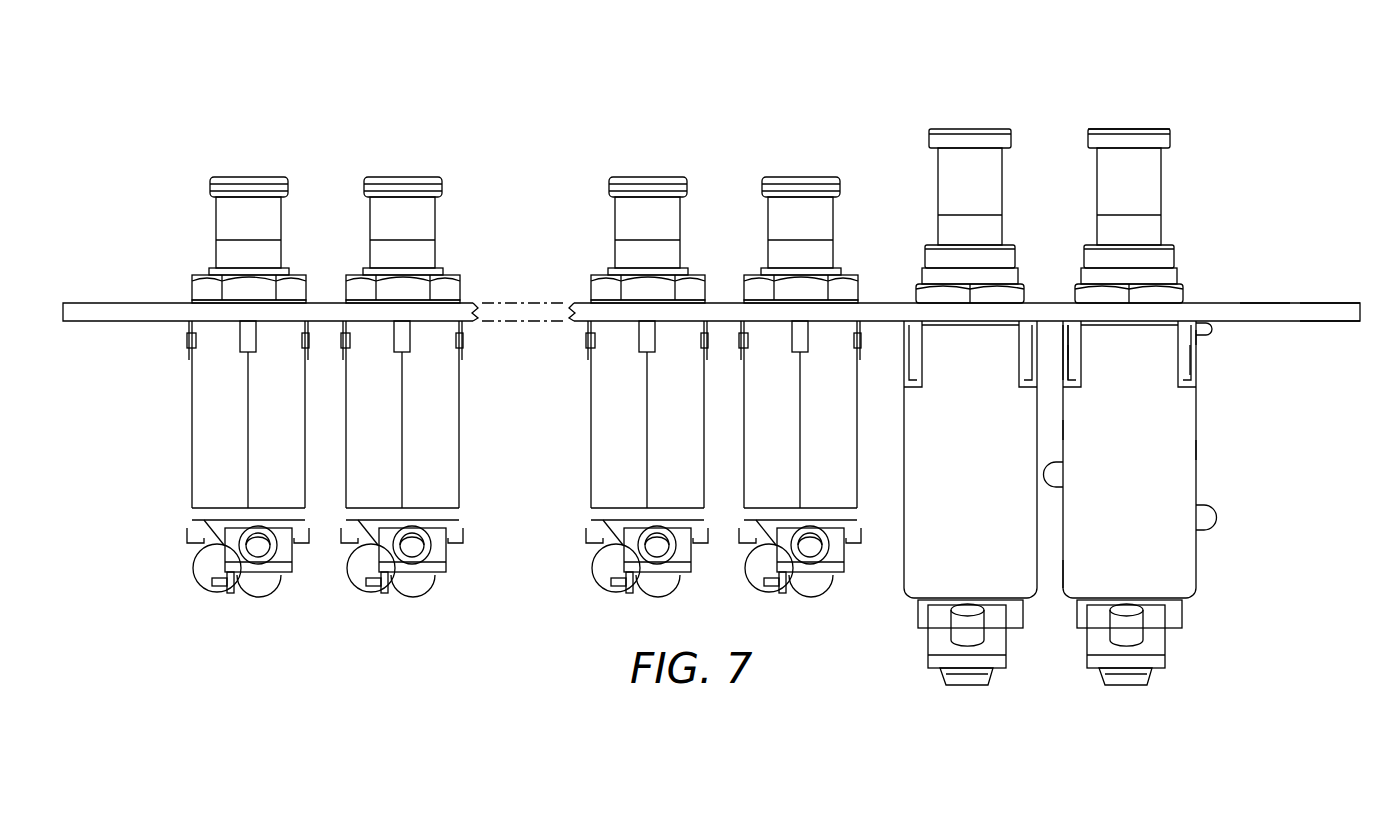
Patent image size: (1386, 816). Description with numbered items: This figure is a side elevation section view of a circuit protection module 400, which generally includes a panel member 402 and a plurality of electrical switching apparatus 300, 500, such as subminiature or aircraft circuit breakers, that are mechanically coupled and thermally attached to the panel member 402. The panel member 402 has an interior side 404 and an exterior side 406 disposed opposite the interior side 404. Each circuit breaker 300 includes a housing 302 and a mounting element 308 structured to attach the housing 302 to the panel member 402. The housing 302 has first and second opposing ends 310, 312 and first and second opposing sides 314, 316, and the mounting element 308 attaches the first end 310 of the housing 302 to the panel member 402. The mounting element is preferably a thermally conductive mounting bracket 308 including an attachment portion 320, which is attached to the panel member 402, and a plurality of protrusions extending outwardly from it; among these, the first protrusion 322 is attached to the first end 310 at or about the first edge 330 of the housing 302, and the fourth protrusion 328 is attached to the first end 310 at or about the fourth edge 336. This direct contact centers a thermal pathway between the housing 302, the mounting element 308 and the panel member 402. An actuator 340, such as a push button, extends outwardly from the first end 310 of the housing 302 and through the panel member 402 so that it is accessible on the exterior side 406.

The circuit breaker 300 is at (891, 584).
The housing 302 is at (1200, 479).
The mounting element 308 is at (1210, 346).
The first end 310 is at (1054, 339).
The second end 312 is at (1056, 576).
The first side 314 is at (1209, 520).
The second side 316 is at (1058, 484).
The attachment portion 320 is at (1192, 330).
The first protrusion 322 is at (1190, 374).
The fourth protrusion 328 is at (1073, 352).
The first edge 330 is at (1195, 448).
The fourth edge 336 is at (1064, 428).
The actuator 340 is at (1141, 128).
The circuit protection module 400 is at (542, 595).
The panel member 402 is at (1266, 300).
The interior side 404 is at (1339, 322).
The exterior side 406 is at (1326, 302).
The electrical switching apparatus 500 is at (789, 171).